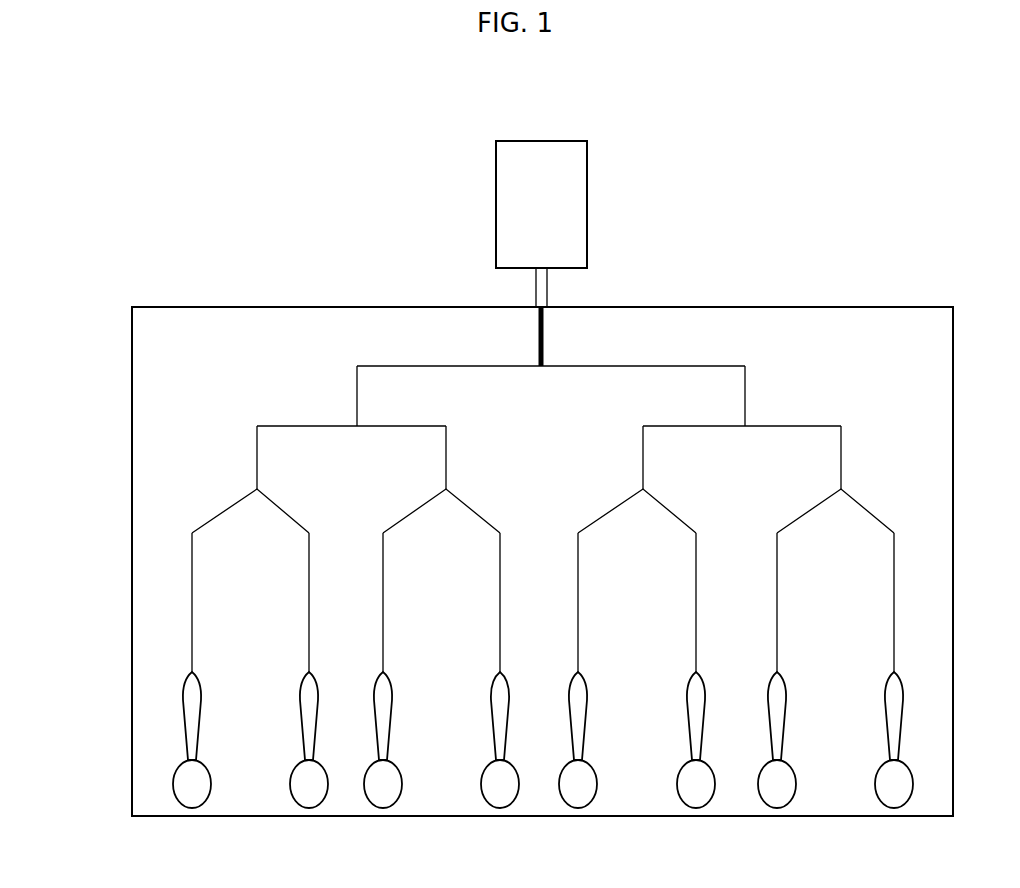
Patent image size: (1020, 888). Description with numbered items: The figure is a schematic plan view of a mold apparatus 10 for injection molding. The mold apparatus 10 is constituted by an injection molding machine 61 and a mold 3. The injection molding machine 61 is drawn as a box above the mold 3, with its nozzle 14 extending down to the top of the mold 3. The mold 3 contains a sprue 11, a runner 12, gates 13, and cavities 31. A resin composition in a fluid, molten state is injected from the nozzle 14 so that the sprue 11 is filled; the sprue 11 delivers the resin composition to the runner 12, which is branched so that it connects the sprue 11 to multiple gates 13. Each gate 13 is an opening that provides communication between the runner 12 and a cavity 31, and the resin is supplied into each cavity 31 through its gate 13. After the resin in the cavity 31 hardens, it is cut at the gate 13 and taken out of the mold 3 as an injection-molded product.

The mold apparatus 10 is at (863, 119).
The mold 3 is at (205, 306).
The injection molding machine 61 is at (560, 141).
The nozzle 14 is at (535, 300).
The sprue 11 is at (545, 328).
The runner 12 is at (462, 365).
The gate 13 is at (192, 672).
The cavity 31 is at (192, 787).